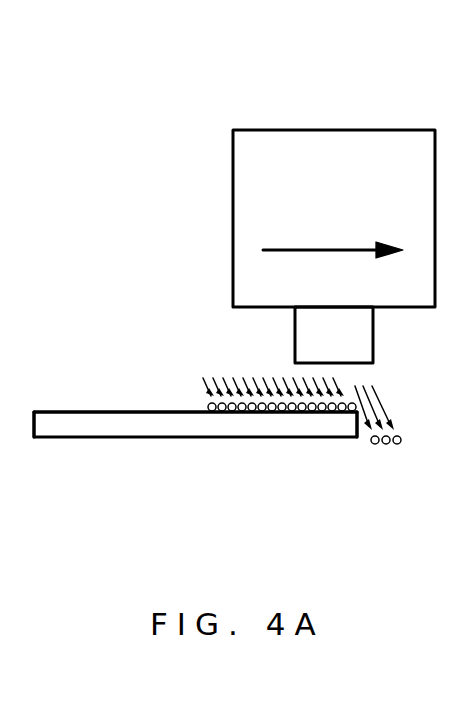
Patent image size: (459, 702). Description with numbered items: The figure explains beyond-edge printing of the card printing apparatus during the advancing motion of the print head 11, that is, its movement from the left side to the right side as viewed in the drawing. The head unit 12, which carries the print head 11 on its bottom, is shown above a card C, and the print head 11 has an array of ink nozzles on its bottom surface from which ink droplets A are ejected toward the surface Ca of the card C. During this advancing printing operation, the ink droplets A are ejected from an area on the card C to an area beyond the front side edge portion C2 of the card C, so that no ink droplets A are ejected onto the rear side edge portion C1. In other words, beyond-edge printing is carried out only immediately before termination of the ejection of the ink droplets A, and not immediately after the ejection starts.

The head unit 12 is at (268, 130).
The print head 11 is at (295, 333).
The card C is at (145, 426).
The surface of workpiece Ca is at (72, 412).
The rear side edge portion C1 is at (34, 426).
The front side edge portion C2 is at (356, 426).
The ink droplets A is at (213, 400).